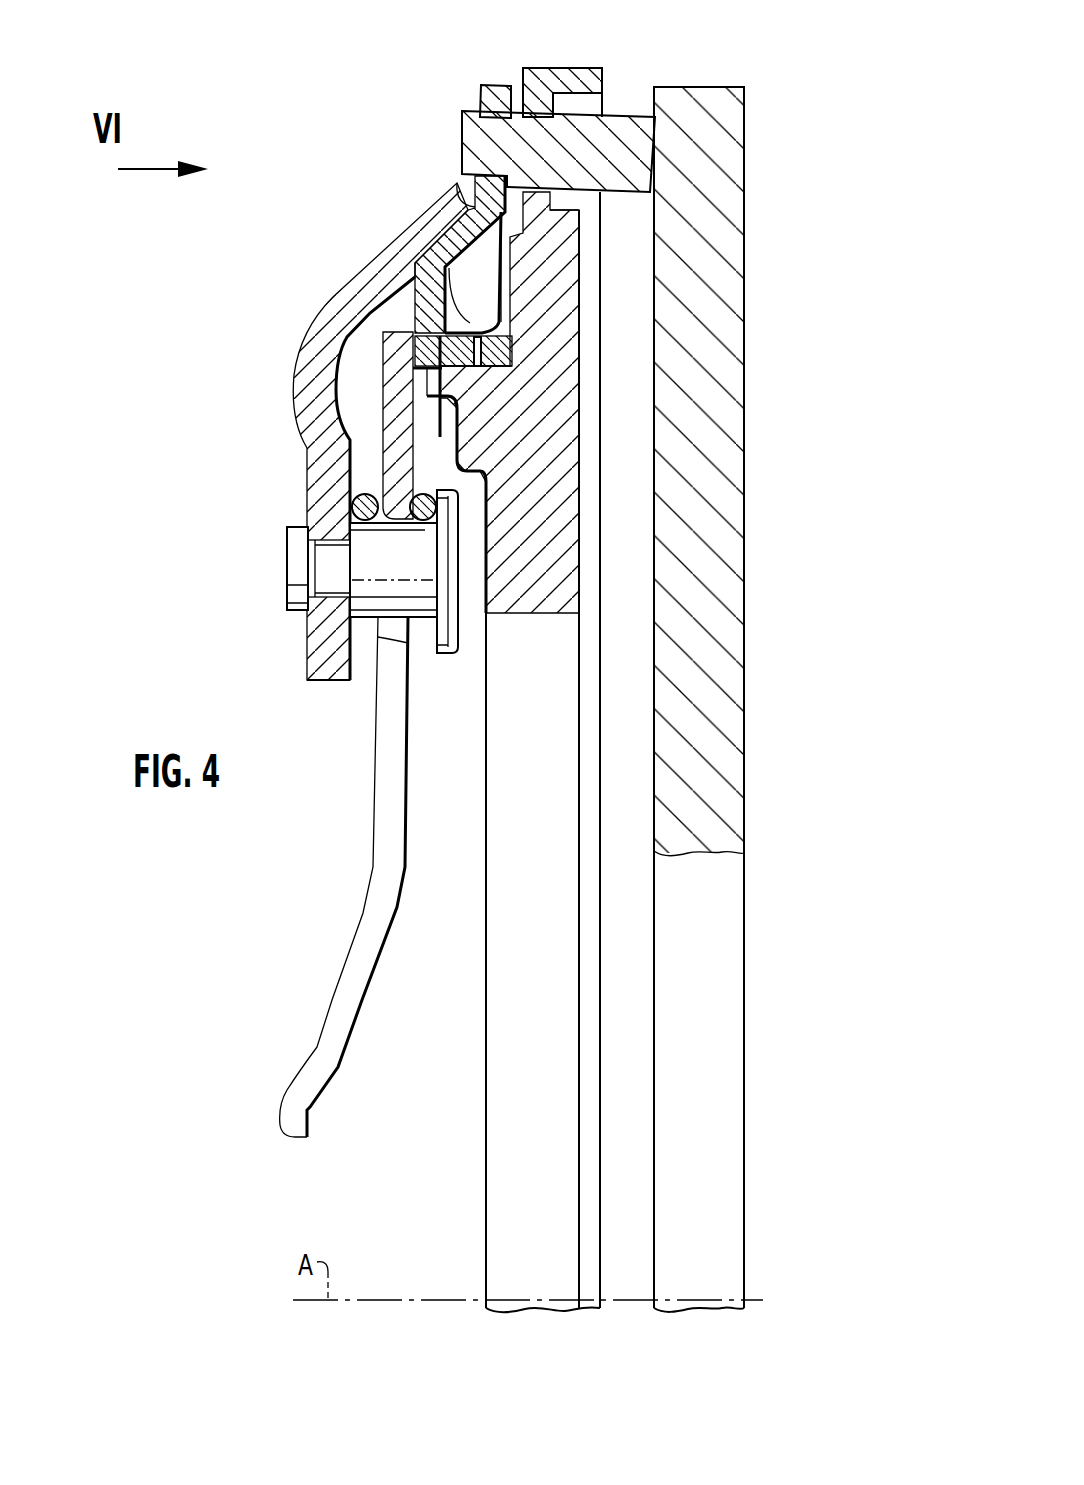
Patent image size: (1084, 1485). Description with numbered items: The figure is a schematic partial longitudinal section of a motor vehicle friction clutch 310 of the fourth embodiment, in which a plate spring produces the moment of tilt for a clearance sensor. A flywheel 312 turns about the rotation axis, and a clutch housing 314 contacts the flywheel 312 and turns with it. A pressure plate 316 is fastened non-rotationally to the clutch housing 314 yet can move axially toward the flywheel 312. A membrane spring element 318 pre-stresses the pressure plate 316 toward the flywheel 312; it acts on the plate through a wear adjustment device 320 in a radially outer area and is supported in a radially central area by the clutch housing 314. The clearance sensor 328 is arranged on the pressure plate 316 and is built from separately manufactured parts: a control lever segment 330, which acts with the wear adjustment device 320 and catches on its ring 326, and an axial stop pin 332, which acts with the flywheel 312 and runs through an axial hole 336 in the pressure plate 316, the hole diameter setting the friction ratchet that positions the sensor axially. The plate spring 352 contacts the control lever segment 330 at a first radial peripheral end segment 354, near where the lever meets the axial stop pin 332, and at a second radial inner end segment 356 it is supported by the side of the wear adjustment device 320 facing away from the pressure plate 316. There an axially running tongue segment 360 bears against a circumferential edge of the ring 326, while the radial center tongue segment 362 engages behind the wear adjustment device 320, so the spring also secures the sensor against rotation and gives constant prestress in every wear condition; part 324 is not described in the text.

The motor vehicle friction clutch 310 is at (375, 243).
The flywheel 312 is at (732, 730).
The clutch housing 314 is at (303, 387).
The pressure plate 316 is at (497, 1148).
The membrane spring element 318 is at (363, 943).
The wear adjustment device 320 is at (484, 389).
The leaf spring 324 is at (458, 351).
The ring 326 is at (512, 366).
The clearance sensor 328 is at (453, 110).
The control lever segment 330 is at (470, 190).
The axial stop pin 332 is at (635, 120).
The axial hole 336 is at (542, 92).
The plate spring 352 is at (490, 257).
The first radial peripheral end segment 354 is at (515, 82).
The second radial inner end segment 356 is at (463, 200).
The tongue segment 360 is at (407, 280).
The center tongue segment 362 is at (305, 452).